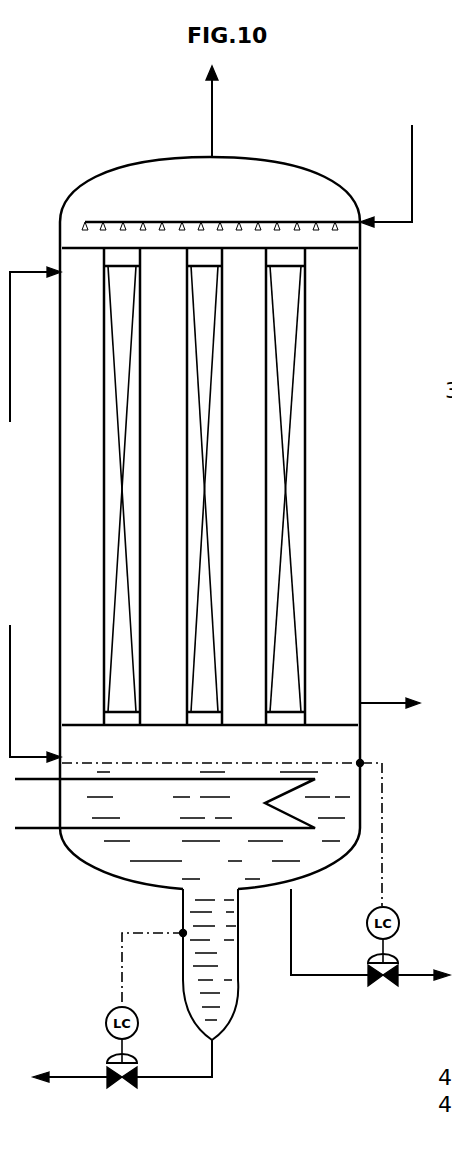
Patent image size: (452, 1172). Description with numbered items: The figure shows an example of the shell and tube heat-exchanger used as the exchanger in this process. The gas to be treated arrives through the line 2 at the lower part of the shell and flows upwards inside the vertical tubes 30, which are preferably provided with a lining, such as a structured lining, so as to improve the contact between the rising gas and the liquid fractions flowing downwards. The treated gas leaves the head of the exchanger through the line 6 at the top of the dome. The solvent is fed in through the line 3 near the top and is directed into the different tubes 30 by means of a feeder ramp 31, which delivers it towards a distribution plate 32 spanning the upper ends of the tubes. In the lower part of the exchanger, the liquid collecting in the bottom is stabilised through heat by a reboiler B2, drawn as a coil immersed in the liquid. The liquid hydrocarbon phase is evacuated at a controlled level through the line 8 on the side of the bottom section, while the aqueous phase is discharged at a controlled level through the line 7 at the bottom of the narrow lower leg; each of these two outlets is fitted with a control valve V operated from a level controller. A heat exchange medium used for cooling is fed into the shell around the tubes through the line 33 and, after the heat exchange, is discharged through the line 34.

The line 2 is at (13, 642).
The line 3 is at (405, 226).
The line 6 is at (212, 106).
The line 7 is at (207, 1078).
The line 8 is at (318, 976).
The vertical tubes 30 is at (113, 473).
The feeder ramp 31 is at (285, 222).
The distribution plate 32 is at (80, 248).
The line 33 is at (37, 270).
The line 34 is at (388, 703).
The reboiler B2 is at (47, 830).
The control valve V is at (252, 1024).